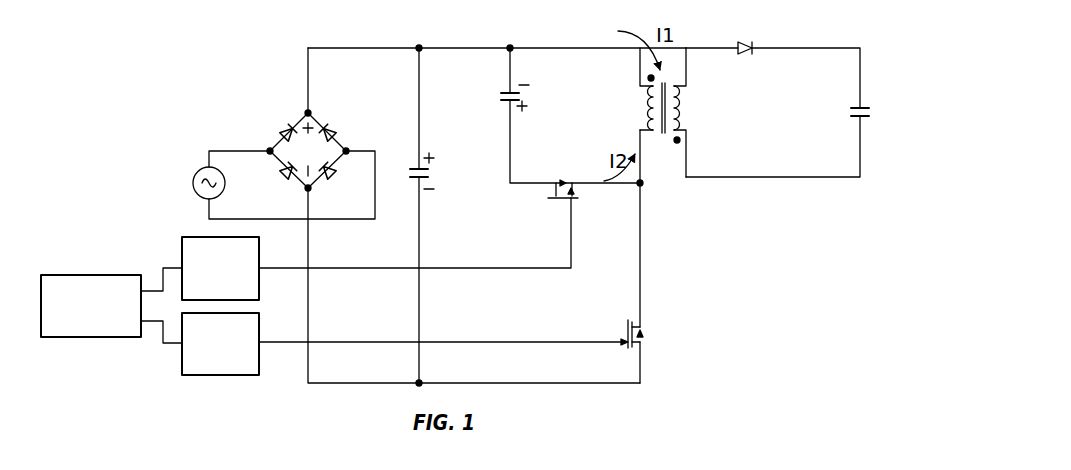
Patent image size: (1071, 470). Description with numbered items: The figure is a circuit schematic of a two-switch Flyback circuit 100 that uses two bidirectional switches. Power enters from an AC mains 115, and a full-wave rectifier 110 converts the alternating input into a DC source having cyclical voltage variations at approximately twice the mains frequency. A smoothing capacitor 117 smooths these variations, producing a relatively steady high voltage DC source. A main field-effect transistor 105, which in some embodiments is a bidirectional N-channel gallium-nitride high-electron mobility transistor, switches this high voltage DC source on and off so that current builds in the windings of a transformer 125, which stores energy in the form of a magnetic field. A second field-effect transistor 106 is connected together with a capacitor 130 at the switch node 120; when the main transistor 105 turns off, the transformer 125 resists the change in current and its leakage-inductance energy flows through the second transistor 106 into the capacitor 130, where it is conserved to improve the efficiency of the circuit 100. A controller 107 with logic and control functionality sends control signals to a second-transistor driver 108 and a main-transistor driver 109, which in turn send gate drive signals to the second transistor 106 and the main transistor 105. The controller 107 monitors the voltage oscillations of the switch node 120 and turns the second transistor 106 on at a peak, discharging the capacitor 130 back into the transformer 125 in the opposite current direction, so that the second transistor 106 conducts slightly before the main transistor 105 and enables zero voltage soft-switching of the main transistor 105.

The two-switch Flyback circuit 100 is at (285, 56).
The main field-effect transistor (MFET) 105 is at (626, 332).
The second field-effect transistor (SFET) 106 is at (560, 199).
The controller 107 is at (91, 275).
The SFET driver 108 is at (182, 251).
The MFET driver 109 is at (182, 358).
The full-wave rectifier 110 is at (275, 116).
The AC mains 115 is at (193, 164).
The smoothing capacitor (Cs) 117 is at (417, 172).
The switch node (SW) 120 is at (648, 187).
The transformer 125 is at (675, 112).
The capacitor Cx 130 is at (506, 96).